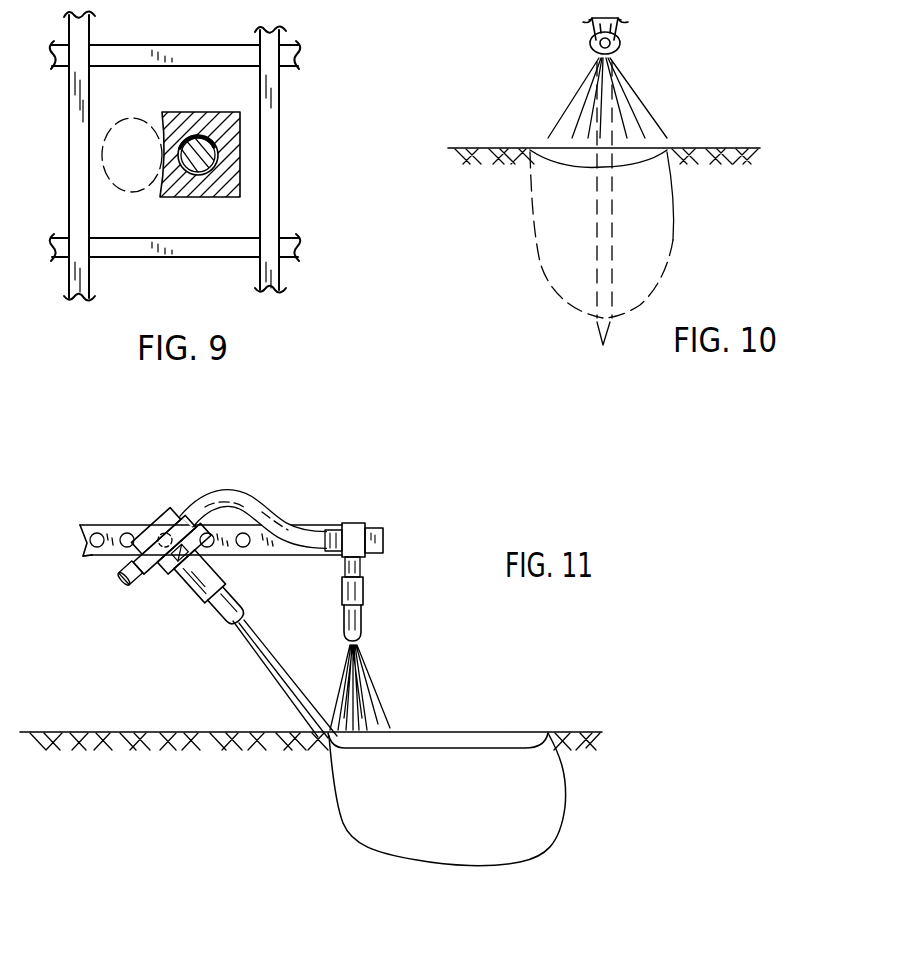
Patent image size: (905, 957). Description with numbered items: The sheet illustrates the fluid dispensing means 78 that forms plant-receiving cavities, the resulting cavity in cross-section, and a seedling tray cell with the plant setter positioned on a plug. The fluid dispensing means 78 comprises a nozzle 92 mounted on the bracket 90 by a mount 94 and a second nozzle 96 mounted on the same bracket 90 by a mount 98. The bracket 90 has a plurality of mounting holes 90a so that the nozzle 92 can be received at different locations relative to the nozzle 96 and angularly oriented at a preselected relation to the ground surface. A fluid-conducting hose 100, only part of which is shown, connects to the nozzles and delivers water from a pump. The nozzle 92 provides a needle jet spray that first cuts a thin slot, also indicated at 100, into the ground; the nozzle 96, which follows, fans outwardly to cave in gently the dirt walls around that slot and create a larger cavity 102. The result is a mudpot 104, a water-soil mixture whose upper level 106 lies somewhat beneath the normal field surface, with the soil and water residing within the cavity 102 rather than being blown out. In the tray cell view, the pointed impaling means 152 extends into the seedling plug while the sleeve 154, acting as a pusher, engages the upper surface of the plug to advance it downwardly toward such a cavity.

In FIG. 11, the fluid dispensing means 78 is at (143, 631).
In FIG. 11, the bracket 90 is at (87, 525).
In FIG. 11, the mounting holes 90a is at (92, 548).
In FIG. 11, the nozzle 92 is at (197, 601).
In FIG. 11, the mount 94 is at (163, 537).
In FIG. 11, the second nozzle 96 is at (367, 593).
In FIG. 11, the mount 98 is at (352, 524).
In FIG. 10, the fluid-conducting hose 100 is at (612, 253).
In FIG. 11, the fluid-conducting hose 100 is at (260, 503).
In FIG. 10, the cavity 102 is at (660, 283).
In FIG. 11, the cavity 102 is at (568, 815).
In FIG. 10, the mudpot 104 is at (648, 211).
In FIG. 10, the upper level 106 is at (666, 150).
In FIG. 11, the upper level 106 is at (527, 738).
In FIG. 9, the impaling means 152 is at (210, 160).
In FIG. 9, the sleeve 154 is at (235, 122).